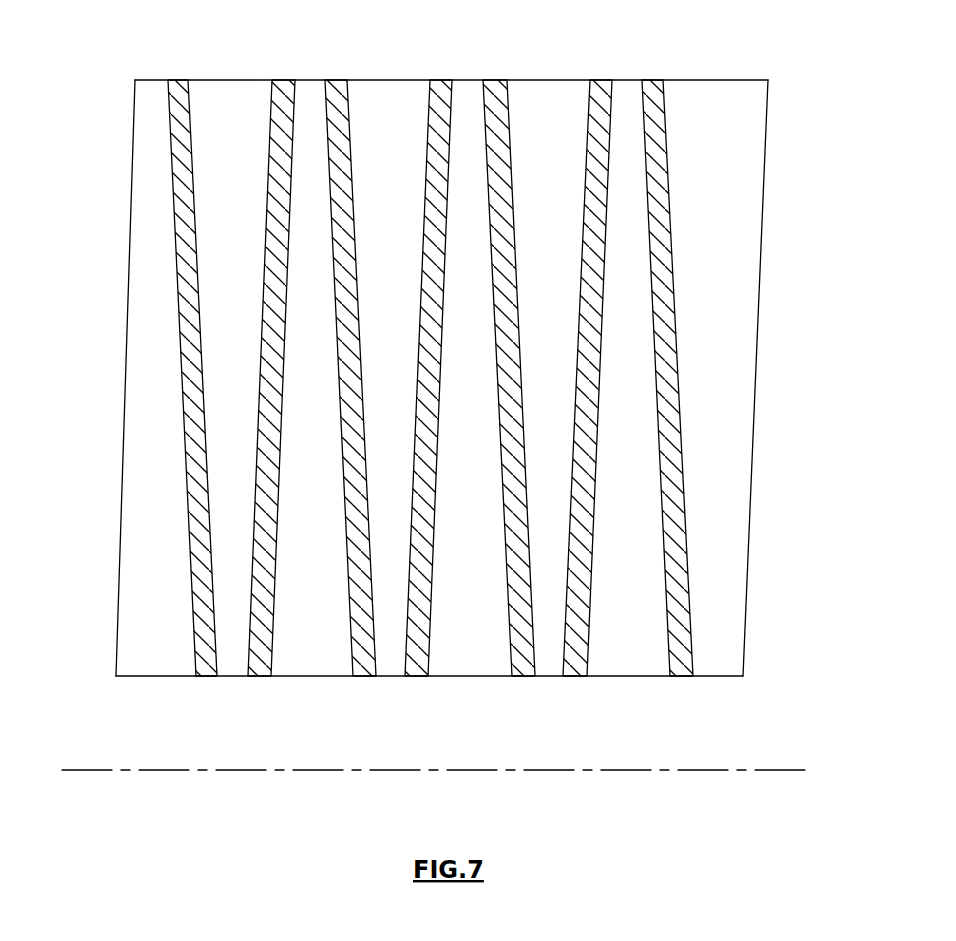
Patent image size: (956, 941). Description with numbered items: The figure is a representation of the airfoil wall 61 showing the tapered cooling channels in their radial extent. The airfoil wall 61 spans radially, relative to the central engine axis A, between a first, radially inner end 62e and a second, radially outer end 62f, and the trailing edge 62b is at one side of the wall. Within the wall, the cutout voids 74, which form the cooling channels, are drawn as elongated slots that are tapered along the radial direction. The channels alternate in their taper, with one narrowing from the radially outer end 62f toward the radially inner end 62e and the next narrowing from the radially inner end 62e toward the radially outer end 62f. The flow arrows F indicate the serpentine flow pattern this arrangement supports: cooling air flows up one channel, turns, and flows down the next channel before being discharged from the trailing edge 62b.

The airfoil wall 61 is at (110, 525).
The trailing edge 62b is at (768, 105).
The first radial end 62e is at (305, 676).
The second radial end 62f is at (398, 80).
The cutout voids 74 is at (560, 348).
The central engine axis A is at (97, 770).
The flow arrows F is at (248, 105).